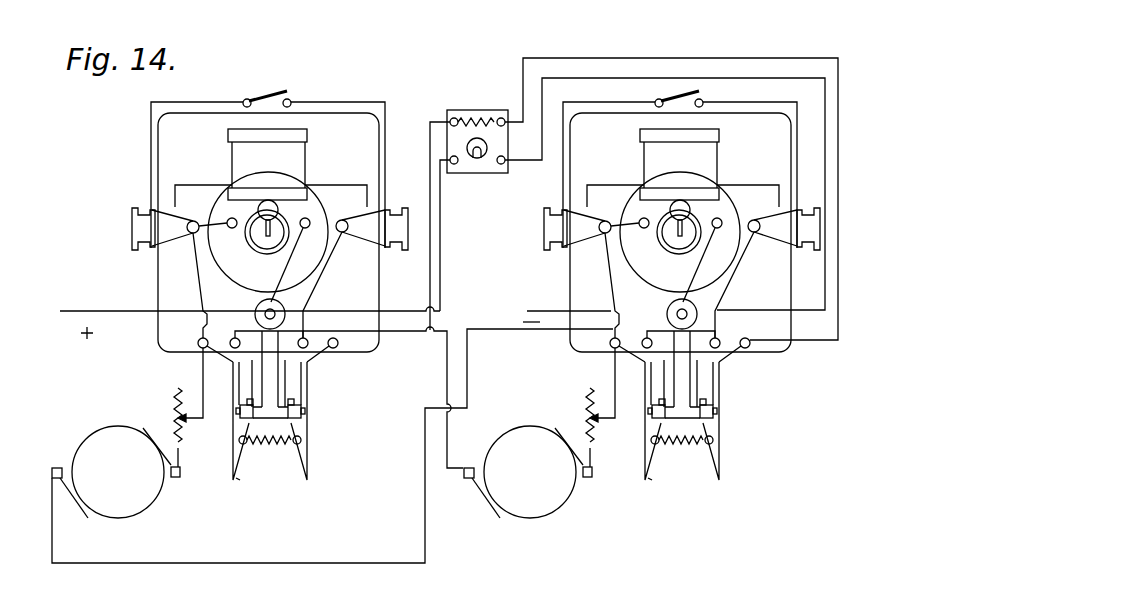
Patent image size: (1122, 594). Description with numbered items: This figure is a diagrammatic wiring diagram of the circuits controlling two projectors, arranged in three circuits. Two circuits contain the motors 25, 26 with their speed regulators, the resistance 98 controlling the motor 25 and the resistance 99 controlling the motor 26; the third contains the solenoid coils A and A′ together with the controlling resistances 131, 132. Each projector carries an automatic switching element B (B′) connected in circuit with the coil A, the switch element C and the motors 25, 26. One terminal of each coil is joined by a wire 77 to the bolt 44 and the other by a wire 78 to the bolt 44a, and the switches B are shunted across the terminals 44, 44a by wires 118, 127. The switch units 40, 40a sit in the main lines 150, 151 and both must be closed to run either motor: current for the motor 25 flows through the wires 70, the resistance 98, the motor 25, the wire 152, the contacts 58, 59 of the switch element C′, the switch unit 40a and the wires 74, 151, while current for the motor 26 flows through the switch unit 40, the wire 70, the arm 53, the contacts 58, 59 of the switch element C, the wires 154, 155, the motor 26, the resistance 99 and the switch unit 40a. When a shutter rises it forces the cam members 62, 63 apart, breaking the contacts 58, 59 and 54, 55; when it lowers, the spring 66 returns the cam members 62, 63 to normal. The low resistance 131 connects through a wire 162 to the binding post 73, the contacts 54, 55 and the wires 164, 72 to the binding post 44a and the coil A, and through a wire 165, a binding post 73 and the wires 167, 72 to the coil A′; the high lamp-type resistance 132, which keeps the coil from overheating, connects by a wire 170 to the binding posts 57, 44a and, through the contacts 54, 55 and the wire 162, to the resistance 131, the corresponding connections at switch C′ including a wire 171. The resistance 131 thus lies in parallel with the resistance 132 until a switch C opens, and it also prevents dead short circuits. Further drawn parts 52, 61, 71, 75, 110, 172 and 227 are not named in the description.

The motor 25 is at (137, 505).
The motor 26 is at (520, 498).
The switch unit 40 is at (262, 238).
The switch unit 40a is at (680, 232).
The bolt 44 is at (132, 230).
The bolt 44a is at (396, 207).
The jaw member 52 is at (306, 400).
The arm 53 is at (240, 392).
The contact 54 is at (294, 410).
The contact 55 is at (294, 420).
The binding post 57 is at (331, 338).
The contact 58 is at (245, 412).
The contact 59 is at (248, 420).
The bracket pivot 61 is at (233, 338).
The cam member 62 is at (308, 458).
The cam member 63 is at (241, 456).
The spring 66 is at (266, 446).
The wire 70 is at (198, 283).
The pivot 71 is at (199, 340).
The wire 72 is at (322, 281).
The binding post 73 is at (340, 347).
The wire 74 is at (288, 270).
The pivot disc 75 is at (276, 310).
The wire 77 is at (193, 185).
The wire 78 is at (338, 185).
The resistance 98 is at (172, 405).
The resistance 99 is at (583, 412).
The casing 110 is at (151, 146).
The wire 118 is at (680, 189).
The wire 127 is at (351, 102).
The resistance 131 is at (478, 110).
The resistance 132 is at (482, 152).
The main line 150 is at (138, 318).
The main line 151 is at (557, 315).
The wire 152 is at (318, 563).
The wire 154 is at (263, 373).
The wire 155 is at (444, 331).
The wire 162 is at (428, 264).
The wire 164 is at (280, 380).
The wire 165 is at (672, 58).
The wire 167 is at (729, 383).
The wire 170 is at (442, 207).
The wire 171 is at (752, 78).
The stem 172 is at (650, 369).
The wire 227 is at (683, 163).
The coil A is at (290, 165).
The automatic switching element B is at (268, 95).
The switch element C is at (286, 396).